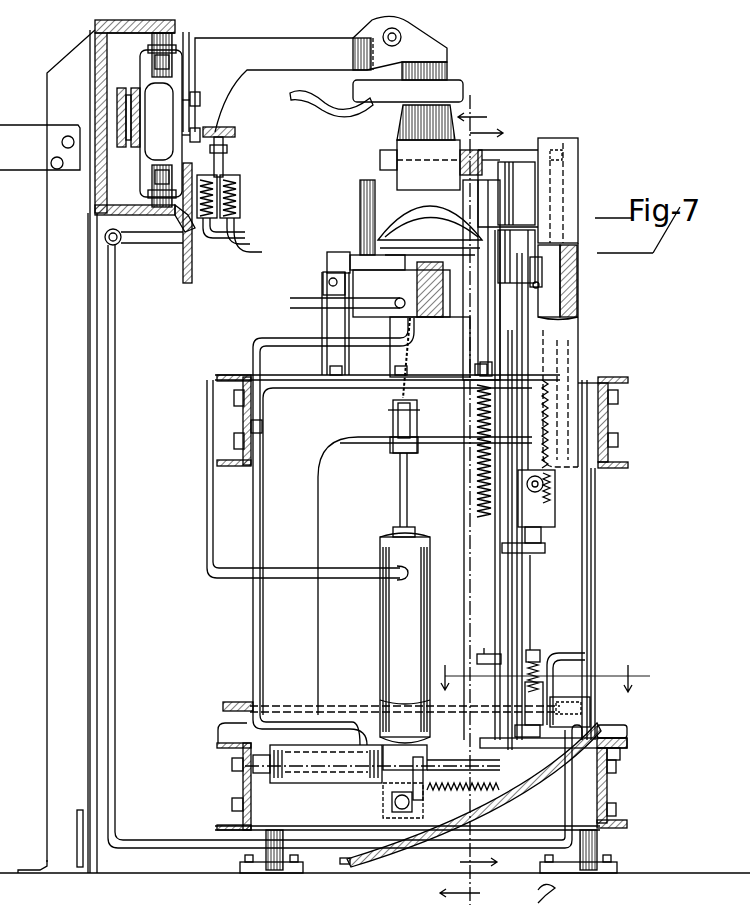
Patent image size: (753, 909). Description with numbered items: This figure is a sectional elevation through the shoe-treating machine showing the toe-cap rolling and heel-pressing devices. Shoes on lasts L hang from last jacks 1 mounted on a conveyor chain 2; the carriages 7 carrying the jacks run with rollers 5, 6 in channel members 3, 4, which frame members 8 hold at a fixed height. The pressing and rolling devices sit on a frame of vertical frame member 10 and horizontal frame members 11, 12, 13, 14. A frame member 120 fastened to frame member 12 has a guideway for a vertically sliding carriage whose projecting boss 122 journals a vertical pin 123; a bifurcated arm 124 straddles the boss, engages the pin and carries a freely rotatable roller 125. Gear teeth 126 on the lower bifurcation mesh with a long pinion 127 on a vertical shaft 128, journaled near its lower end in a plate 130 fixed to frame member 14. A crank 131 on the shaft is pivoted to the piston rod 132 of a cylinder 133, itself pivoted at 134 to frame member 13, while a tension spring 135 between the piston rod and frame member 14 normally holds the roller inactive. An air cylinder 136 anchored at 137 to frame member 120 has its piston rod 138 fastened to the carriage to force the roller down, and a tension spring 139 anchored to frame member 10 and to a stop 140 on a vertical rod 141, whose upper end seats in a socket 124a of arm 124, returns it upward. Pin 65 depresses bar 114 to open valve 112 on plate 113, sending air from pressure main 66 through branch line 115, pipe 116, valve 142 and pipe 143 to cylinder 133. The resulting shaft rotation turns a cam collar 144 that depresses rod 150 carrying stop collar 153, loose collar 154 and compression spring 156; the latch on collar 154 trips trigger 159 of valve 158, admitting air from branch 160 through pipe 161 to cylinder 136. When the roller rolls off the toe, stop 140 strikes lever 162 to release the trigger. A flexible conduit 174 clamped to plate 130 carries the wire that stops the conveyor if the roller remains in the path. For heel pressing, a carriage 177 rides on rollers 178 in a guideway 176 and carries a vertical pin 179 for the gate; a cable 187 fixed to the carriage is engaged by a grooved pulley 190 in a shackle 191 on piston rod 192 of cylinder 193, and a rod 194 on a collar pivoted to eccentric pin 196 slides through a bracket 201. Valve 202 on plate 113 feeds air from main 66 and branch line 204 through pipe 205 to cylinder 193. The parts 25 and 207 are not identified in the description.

The last jacks 1 is at (248, 52).
The conveyor chain 2 is at (117, 107).
The channel member 3 is at (168, 40).
The channel member 4 is at (152, 185).
The roller 5 is at (172, 55).
The roller 6 is at (150, 178).
The carriages 7 is at (162, 95).
The frame members 8 is at (60, 245).
The vertical frame member 10 is at (312, 620).
The horizontal frame member 11 is at (243, 412).
The horizontal frame member 12 is at (608, 422).
The horizontal frame member 13 is at (243, 782).
The horizontal frame member 14 is at (608, 782).
The foot 25 is at (240, 866).
The pin 65 is at (235, 128).
The pressure main 66 is at (105, 237).
The valve 112 is at (225, 160).
The plate 113 is at (243, 236).
The bar 114 is at (236, 134).
The branch line 115 is at (240, 202).
The pipe 116 is at (242, 229).
The frame member 120 is at (578, 306).
The projecting boss 122 is at (555, 172).
The vertical pin 123 is at (560, 150).
The bifurcated arm 124 is at (545, 197).
The socket 124a is at (478, 235).
The roller 125 is at (400, 150).
The gear teeth 126 is at (548, 216).
The long pinion 127 is at (548, 248).
The vertical shaft 128 is at (560, 332).
The plate 130 is at (600, 748).
The crank 131 is at (470, 795).
The piston rod 132 is at (455, 750).
The cylinder 133 is at (352, 786).
The pivot 134 is at (240, 762).
The tension spring 135 is at (482, 799).
The air cylinder 136 is at (477, 445).
The anchor 137 is at (495, 485).
The piston rod 138 is at (560, 292).
The tension spring 139 is at (495, 499).
The stop 140 is at (480, 658).
The vertical rod 141 is at (495, 535).
The valve 142 is at (388, 312).
The pipe 143 is at (300, 334).
The collar 144 is at (548, 547).
The rod 150 is at (522, 620).
The stop collar 153 is at (538, 652).
The loose collar 154 is at (545, 695).
The compression spring 156 is at (563, 898).
The valve 158 is at (582, 714).
The valve-actuating trigger 159 is at (666, 899).
The branch 160 is at (118, 607).
The pipe 161 is at (587, 562).
The lever 162 is at (502, 712).
The flexible conduit 174 is at (408, 850).
The guideway 176 is at (443, 290).
The carriage 177 is at (355, 262).
The rollers 178 is at (440, 308).
The vertical pin 179 is at (378, 195).
The cable 187 is at (400, 378).
The grooved pulley 190 is at (393, 426).
The shackle 191 is at (392, 448).
The piston rod 192 is at (400, 472).
The cylinder 193 is at (388, 612).
The rod 194 is at (323, 287).
The pin 196 is at (325, 272).
The bracket 201 is at (335, 322).
The valve 202 is at (240, 187).
The branch line 204 is at (170, 240).
The pipe 205 is at (207, 490).
The shaft 207 is at (358, 225).
The lasts L is at (452, 102).